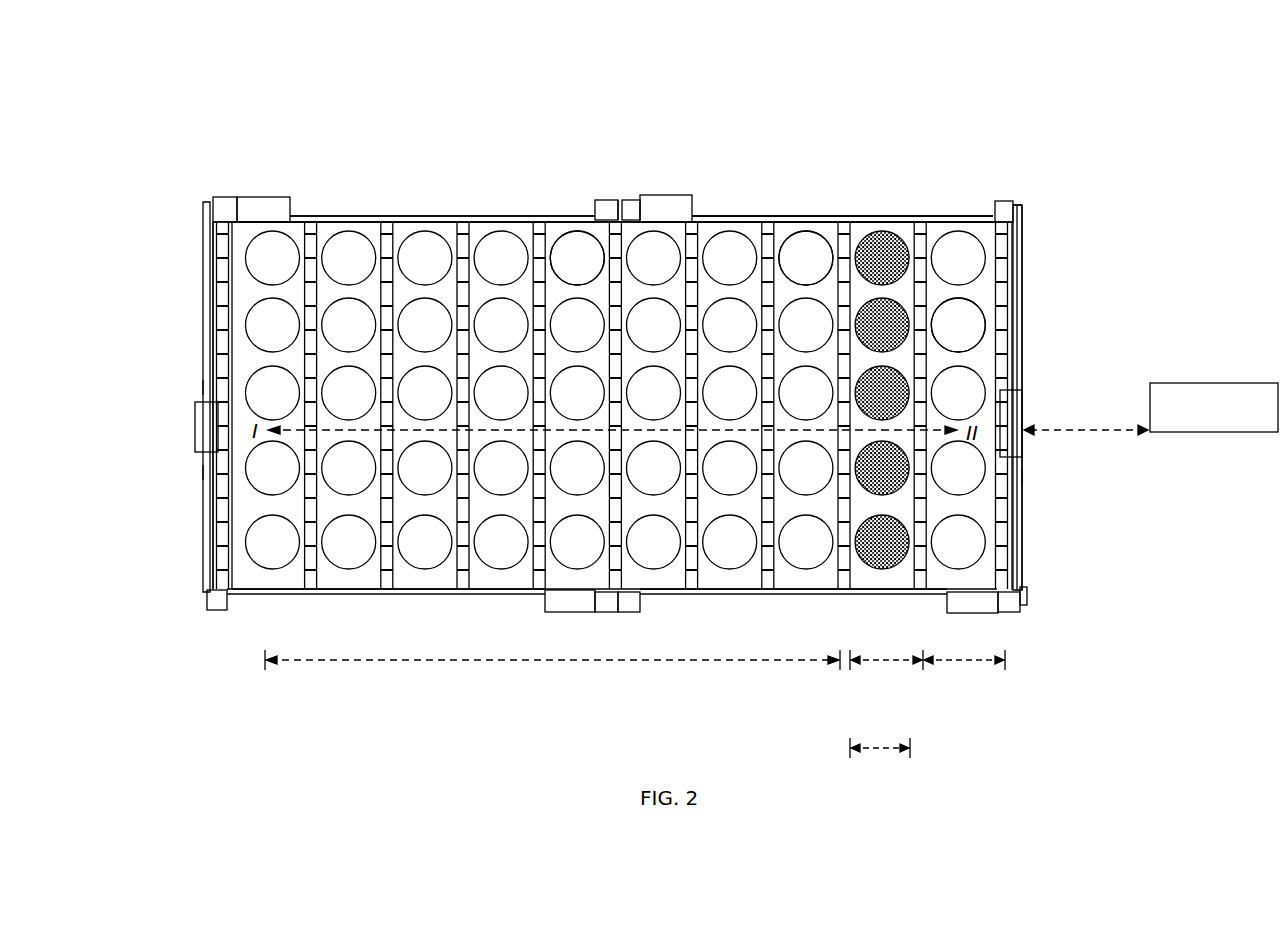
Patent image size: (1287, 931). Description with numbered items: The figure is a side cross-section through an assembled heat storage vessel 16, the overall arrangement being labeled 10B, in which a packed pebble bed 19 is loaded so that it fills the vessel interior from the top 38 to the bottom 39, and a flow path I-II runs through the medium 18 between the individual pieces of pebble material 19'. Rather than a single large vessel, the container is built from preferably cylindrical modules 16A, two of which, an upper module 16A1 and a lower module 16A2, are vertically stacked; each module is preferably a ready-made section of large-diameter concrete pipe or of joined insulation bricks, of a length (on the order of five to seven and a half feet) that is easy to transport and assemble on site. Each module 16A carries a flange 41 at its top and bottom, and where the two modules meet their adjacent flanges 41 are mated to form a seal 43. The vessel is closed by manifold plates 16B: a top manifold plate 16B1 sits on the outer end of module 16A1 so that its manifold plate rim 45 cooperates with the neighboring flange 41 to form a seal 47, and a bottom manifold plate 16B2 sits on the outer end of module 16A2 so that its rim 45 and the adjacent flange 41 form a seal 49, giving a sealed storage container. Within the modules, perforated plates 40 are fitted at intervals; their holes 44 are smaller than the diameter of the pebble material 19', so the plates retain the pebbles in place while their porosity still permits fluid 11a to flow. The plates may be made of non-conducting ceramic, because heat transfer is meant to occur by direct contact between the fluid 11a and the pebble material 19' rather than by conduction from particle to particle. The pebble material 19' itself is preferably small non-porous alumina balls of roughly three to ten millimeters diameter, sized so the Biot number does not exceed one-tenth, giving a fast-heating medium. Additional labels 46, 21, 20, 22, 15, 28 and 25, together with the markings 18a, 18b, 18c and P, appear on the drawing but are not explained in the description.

The battery module 10B is at (234, 122).
The cylindrical module 16A is at (563, 160).
The upper module 16A1 is at (514, 220).
The lower module 16A2 is at (890, 221).
The storage vessel 16 is at (972, 205).
The seal 47 is at (208, 195).
The fastening blocks 46 is at (281, 196).
The flange 41 is at (238, 196).
The seal 43 is at (620, 199).
The manifold plate rim 45 is at (203, 207).
The seal 49 is at (1013, 207).
The manifold plate 16B is at (182, 243).
The top manifold plate 16B1 is at (206, 292).
The bottom manifold plate 16B2 is at (1024, 362).
The holes 44 is at (615, 526).
The perforated plates 40 is at (597, 504).
The medium 18 is at (427, 290).
The packed pebble bed 19 is at (905, 378).
The pebble material 19' is at (822, 242).
The fluid 11a is at (188, 430).
The outlet port 21 is at (1040, 416).
The coolant outlet 20 is at (1075, 461).
The heat exchanger 22 is at (1190, 436).
The left inlet region 15 is at (171, 390).
The left region 28 is at (171, 475).
The top 38 is at (182, 588).
The bottom 39 is at (1039, 594).
The right region 25 is at (1051, 485).
The first cell group width 18a is at (523, 663).
The second cell group width 18b is at (870, 665).
The third cell group width 18c is at (943, 665).
The pitch P is at (880, 757).